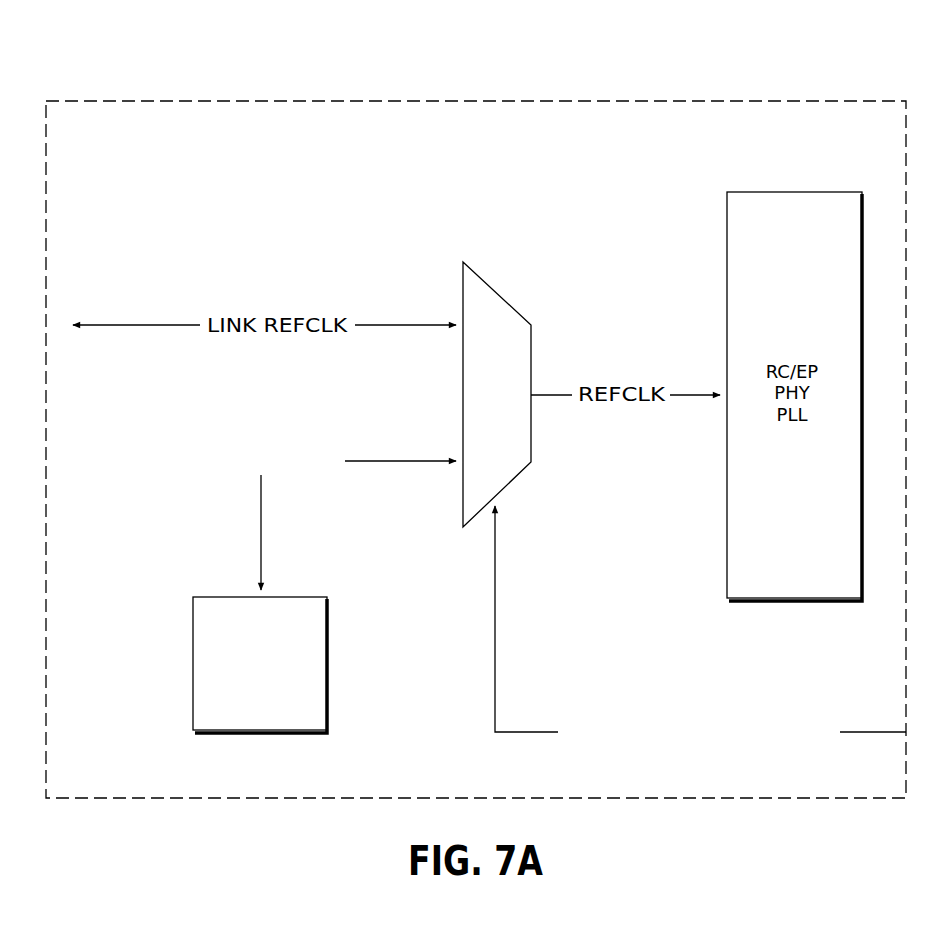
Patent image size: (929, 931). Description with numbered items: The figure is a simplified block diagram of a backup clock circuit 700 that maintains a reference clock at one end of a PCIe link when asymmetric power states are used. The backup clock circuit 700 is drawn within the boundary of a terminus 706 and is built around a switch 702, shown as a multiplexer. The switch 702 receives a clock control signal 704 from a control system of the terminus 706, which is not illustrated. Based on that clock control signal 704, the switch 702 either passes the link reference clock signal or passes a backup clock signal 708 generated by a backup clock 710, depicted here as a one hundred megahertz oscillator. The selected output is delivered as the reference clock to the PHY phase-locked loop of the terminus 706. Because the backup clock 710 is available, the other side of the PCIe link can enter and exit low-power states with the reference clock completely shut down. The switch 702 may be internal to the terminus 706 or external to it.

The backup clock circuit 700 is at (364, 194).
The switch 702 is at (504, 296).
The clock control signal 704 is at (522, 624).
The terminus 706 is at (788, 70).
The backup clock signal 708 is at (403, 482).
The backup clock 710 is at (193, 663).